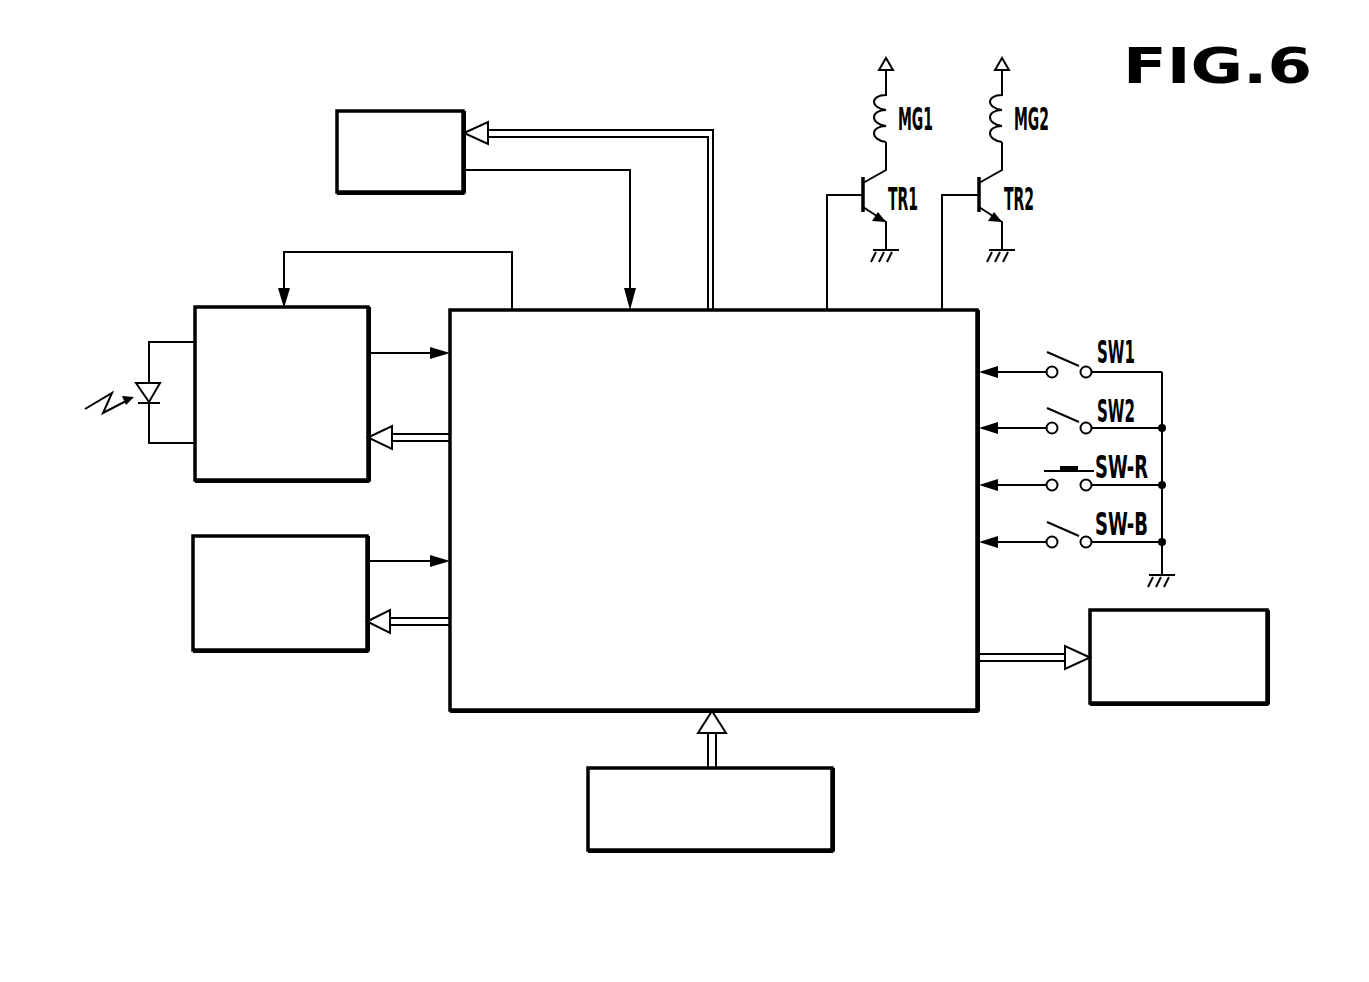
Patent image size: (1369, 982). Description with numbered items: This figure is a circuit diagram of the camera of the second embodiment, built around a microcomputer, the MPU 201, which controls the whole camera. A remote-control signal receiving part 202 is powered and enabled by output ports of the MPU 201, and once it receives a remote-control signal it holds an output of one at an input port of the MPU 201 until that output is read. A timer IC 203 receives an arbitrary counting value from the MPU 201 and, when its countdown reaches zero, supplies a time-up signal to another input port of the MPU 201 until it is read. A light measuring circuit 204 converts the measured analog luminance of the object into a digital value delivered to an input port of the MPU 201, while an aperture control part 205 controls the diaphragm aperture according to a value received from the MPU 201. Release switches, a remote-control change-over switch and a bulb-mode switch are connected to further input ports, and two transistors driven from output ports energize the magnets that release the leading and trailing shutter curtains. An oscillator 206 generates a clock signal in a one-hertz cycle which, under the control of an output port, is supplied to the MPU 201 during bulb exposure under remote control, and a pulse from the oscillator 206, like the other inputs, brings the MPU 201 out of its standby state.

The microcomputer (MPU) 201 is at (930, 712).
The remote-control signal receiving part 202 is at (218, 306).
The timer IC 203 is at (215, 653).
The light measuring circuit 204 is at (588, 790).
The aperture control part 205 is at (1240, 706).
The oscillator (OSC) 206 is at (337, 129).